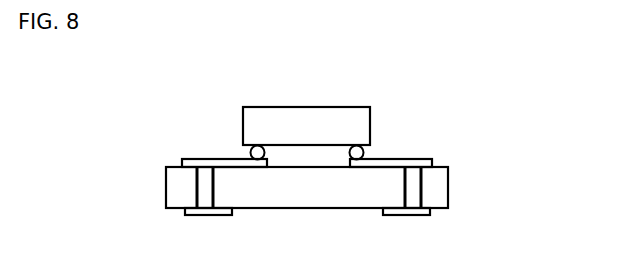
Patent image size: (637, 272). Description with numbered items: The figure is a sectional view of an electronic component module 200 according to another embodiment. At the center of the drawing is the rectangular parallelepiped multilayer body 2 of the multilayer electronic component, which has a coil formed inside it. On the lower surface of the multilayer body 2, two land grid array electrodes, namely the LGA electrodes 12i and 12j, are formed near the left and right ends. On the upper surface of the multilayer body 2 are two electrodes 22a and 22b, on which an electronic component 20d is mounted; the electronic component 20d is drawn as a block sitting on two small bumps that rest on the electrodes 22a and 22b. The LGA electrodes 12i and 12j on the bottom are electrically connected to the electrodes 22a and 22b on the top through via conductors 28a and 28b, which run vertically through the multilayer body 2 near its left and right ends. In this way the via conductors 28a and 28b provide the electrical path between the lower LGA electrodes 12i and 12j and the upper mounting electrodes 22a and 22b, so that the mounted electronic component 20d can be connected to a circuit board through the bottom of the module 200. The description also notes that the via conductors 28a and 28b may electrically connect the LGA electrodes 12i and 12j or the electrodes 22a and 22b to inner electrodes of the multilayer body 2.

The electronic component module 200 is at (566, 83).
The multilayer body 2 is at (325, 219).
The electronic component 20d is at (312, 107).
The electrode 22a is at (227, 159).
The electrode 22b is at (393, 159).
The via conductor 28a is at (196, 202).
The via conductor 28b is at (422, 202).
The LGA electrode 12i is at (214, 215).
The LGA electrode 12j is at (400, 215).